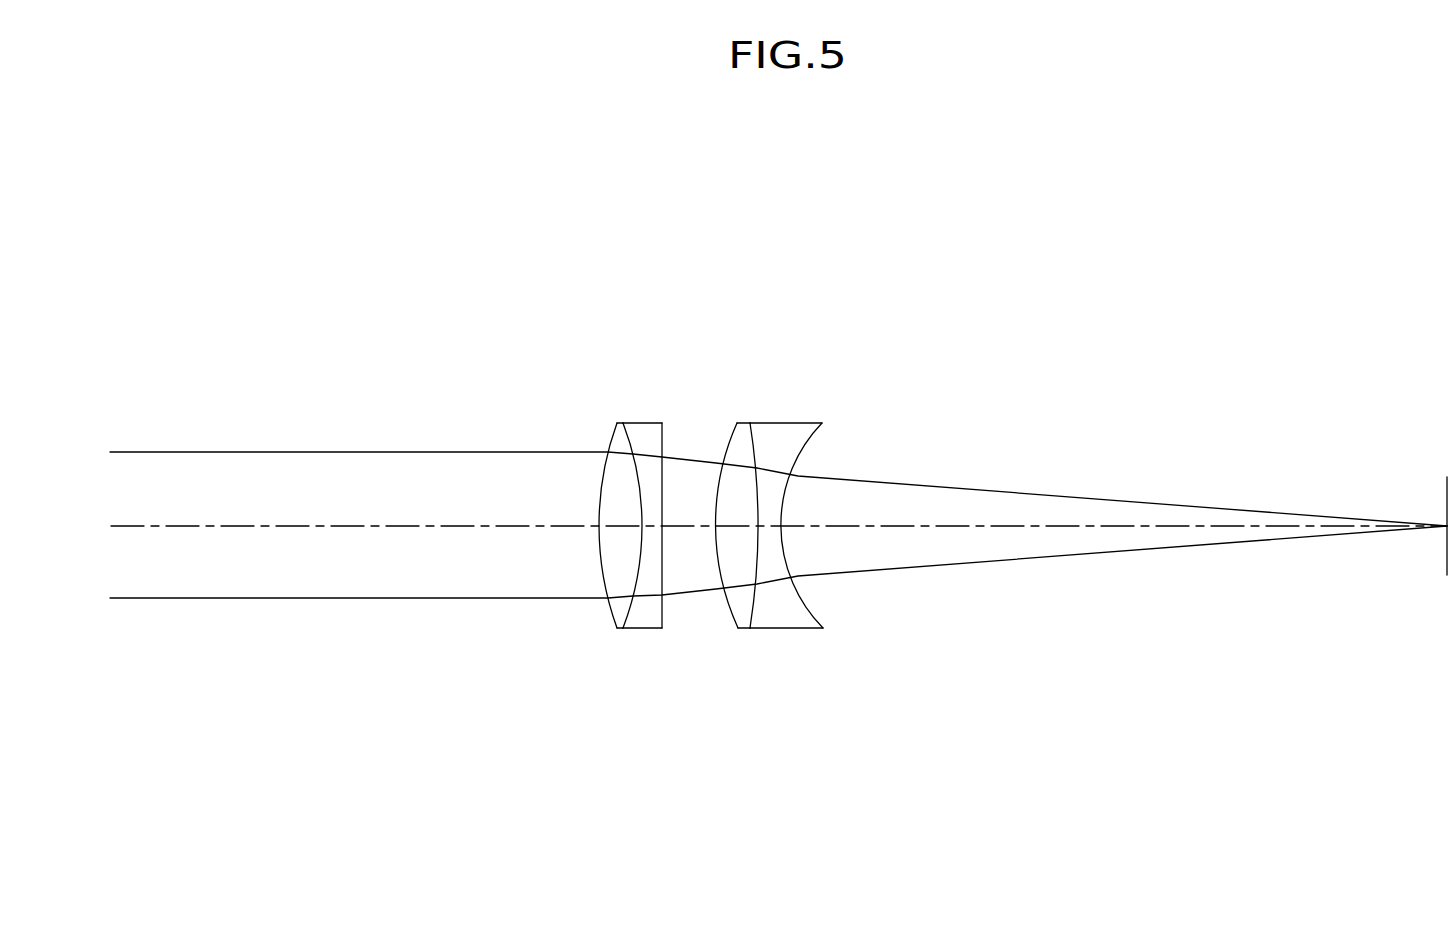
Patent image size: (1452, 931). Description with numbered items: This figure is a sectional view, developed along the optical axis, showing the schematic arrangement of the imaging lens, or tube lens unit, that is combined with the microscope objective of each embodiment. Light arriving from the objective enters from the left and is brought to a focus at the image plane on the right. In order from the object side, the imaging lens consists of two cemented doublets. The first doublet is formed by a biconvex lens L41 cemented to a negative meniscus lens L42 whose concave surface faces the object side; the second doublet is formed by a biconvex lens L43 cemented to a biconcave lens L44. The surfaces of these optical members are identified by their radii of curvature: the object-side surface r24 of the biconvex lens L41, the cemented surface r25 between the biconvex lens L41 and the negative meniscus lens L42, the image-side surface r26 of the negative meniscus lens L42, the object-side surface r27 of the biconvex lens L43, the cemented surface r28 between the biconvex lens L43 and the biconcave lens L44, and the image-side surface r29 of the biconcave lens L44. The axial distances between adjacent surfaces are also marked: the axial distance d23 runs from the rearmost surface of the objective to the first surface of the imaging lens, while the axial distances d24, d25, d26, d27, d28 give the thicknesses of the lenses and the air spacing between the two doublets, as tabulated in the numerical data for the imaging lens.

The biconvex lens L41 is at (633, 428).
The negative meniscus lens L42 is at (671, 428).
The biconvex lens L43 is at (764, 428).
The biconcave lens L44 is at (803, 428).
The radius of curvature of surface r24 is at (620, 431).
The radius of curvature of surface r25 is at (632, 438).
The radius of curvature of surface r26 is at (663, 433).
The radius of curvature of surface r27 is at (741, 433).
The radius of curvature of surface r28 is at (756, 447).
The radius of curvature of surface r29 is at (800, 452).
The axial distance d23 is at (365, 527).
The axial distance d24 is at (622, 527).
The axial distance d25 is at (652, 527).
The axial distance d26 is at (687, 527).
The axial distance d27 is at (733, 527).
The axial distance d28 is at (770, 527).